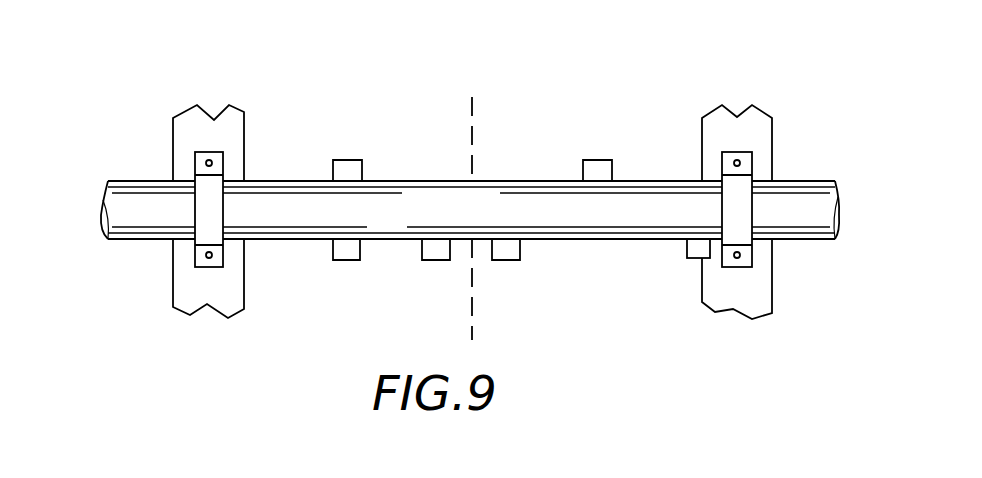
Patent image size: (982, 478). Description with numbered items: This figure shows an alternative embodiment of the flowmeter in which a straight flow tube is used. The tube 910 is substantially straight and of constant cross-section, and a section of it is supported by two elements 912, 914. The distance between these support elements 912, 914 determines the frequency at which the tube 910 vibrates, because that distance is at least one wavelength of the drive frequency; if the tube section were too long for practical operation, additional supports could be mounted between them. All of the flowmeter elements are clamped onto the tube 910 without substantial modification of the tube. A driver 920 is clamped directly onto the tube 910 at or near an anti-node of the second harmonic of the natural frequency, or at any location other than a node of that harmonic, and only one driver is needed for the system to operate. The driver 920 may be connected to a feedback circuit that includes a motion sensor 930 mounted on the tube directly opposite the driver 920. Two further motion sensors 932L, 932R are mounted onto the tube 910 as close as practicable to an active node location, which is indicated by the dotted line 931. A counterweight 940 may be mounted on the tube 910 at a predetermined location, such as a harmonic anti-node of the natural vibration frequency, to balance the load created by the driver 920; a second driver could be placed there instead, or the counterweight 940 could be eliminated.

The tube 910 is at (470, 210).
The support element 912 is at (195, 267).
The support element 914 is at (748, 208).
The driver 920 is at (360, 160).
The counterweight 940 is at (600, 162).
The motion sensor 930 is at (347, 260).
The motion sensor 932L is at (428, 260).
The motion sensor 932R is at (520, 250).
The dotted line 931 is at (472, 140).